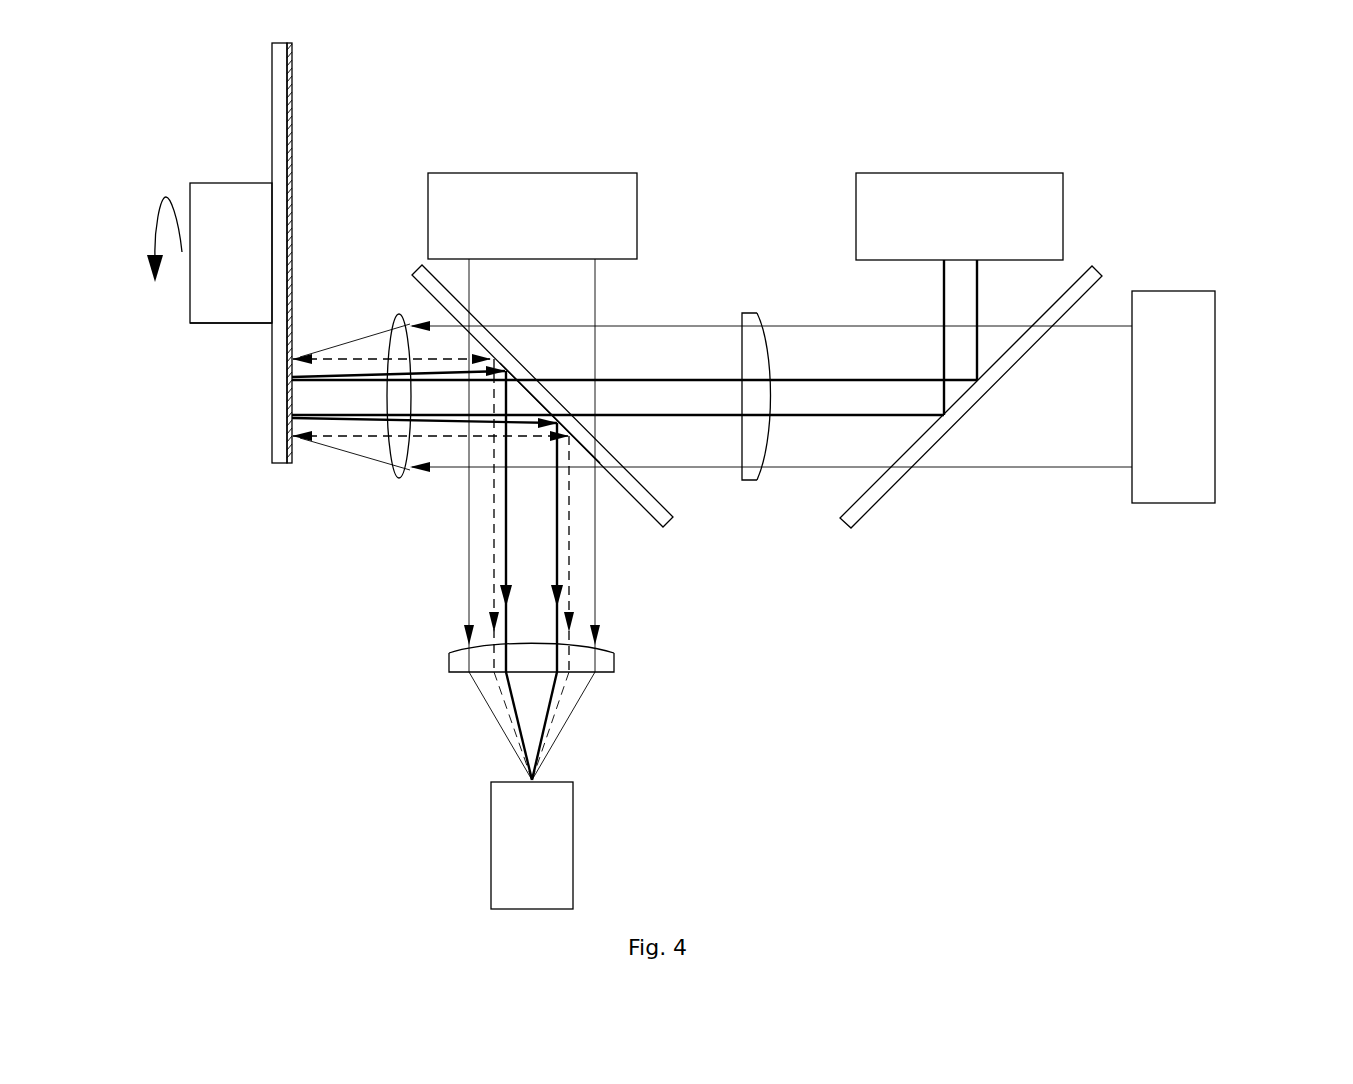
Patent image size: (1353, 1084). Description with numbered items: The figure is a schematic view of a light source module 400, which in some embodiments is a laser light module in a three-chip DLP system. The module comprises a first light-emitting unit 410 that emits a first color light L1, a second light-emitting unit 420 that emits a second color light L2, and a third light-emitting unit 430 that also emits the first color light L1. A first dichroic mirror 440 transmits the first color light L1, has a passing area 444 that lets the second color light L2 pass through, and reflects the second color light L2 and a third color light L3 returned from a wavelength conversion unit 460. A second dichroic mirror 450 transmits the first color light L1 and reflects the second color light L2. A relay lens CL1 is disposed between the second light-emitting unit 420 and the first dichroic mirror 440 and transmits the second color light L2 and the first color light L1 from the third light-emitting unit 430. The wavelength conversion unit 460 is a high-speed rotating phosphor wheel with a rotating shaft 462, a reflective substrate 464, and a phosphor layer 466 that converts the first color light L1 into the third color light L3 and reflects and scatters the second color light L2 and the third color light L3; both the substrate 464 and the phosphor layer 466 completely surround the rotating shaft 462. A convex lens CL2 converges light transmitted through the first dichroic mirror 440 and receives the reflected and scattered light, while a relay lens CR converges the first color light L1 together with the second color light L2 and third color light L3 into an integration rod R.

The light source module 400 is at (1265, 86).
The first light-emitting unit 410 is at (637, 226).
The second light-emitting unit 420 is at (1063, 213).
The third light-emitting unit 430 is at (1205, 402).
The first dichroic mirror 440 is at (665, 522).
The passing area 444 is at (543, 397).
The second dichroic mirror 450 is at (856, 512).
The wavelength conversion unit 460 is at (190, 286).
The rotating shaft 462 is at (230, 323).
The substrate 464 is at (272, 78).
The phosphor layer 466 is at (292, 72).
The first color light L1 is at (595, 290).
The second color light L2 is at (341, 378).
The third color light L3 is at (355, 437).
The relay lens CL1 is at (750, 479).
The convex lens CL2 is at (405, 470).
The relay lens CR is at (614, 659).
The integration rod R is at (563, 824).